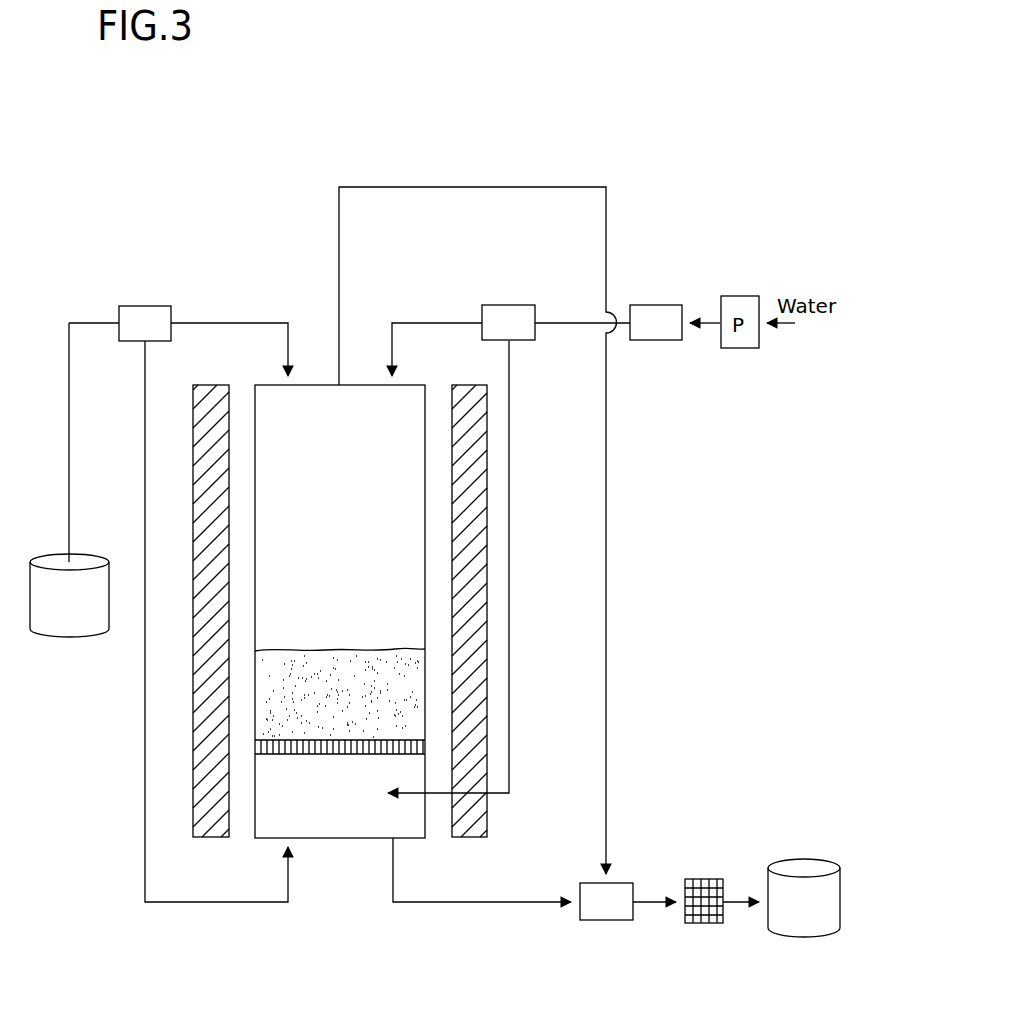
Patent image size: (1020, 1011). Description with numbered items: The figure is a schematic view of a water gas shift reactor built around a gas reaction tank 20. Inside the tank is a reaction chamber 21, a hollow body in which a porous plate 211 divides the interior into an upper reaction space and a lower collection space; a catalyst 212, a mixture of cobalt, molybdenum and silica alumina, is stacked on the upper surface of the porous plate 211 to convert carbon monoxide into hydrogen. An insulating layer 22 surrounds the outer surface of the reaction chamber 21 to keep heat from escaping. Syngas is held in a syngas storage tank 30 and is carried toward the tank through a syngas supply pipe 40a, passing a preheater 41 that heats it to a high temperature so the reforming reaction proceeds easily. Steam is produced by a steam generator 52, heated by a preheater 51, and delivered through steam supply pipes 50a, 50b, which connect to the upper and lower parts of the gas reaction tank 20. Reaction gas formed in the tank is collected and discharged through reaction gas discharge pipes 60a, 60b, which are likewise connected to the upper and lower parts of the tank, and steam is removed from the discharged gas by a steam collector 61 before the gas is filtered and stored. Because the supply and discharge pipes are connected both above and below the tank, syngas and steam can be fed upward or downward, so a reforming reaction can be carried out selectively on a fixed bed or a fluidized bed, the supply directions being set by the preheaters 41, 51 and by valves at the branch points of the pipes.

The gas reaction tank 20 is at (397, 611).
The reaction chamber 21 is at (415, 611).
The insulating layer 22 is at (496, 569).
The syngas storage tank 30 is at (72, 640).
The syngas supply pipe 40a is at (222, 323).
The preheater 41 is at (143, 306).
The steam supply pipe 50a is at (417, 323).
The steam supply pipe 50b is at (509, 630).
The preheater 51 is at (509, 306).
The steam generator 52 is at (656, 306).
The reaction gas discharge pipe 60a is at (467, 905).
The reaction gas discharge pipe 60b is at (483, 187).
The steam collector 61 is at (600, 920).
The porous plate 211 is at (398, 747).
The catalyst 212 is at (415, 697).